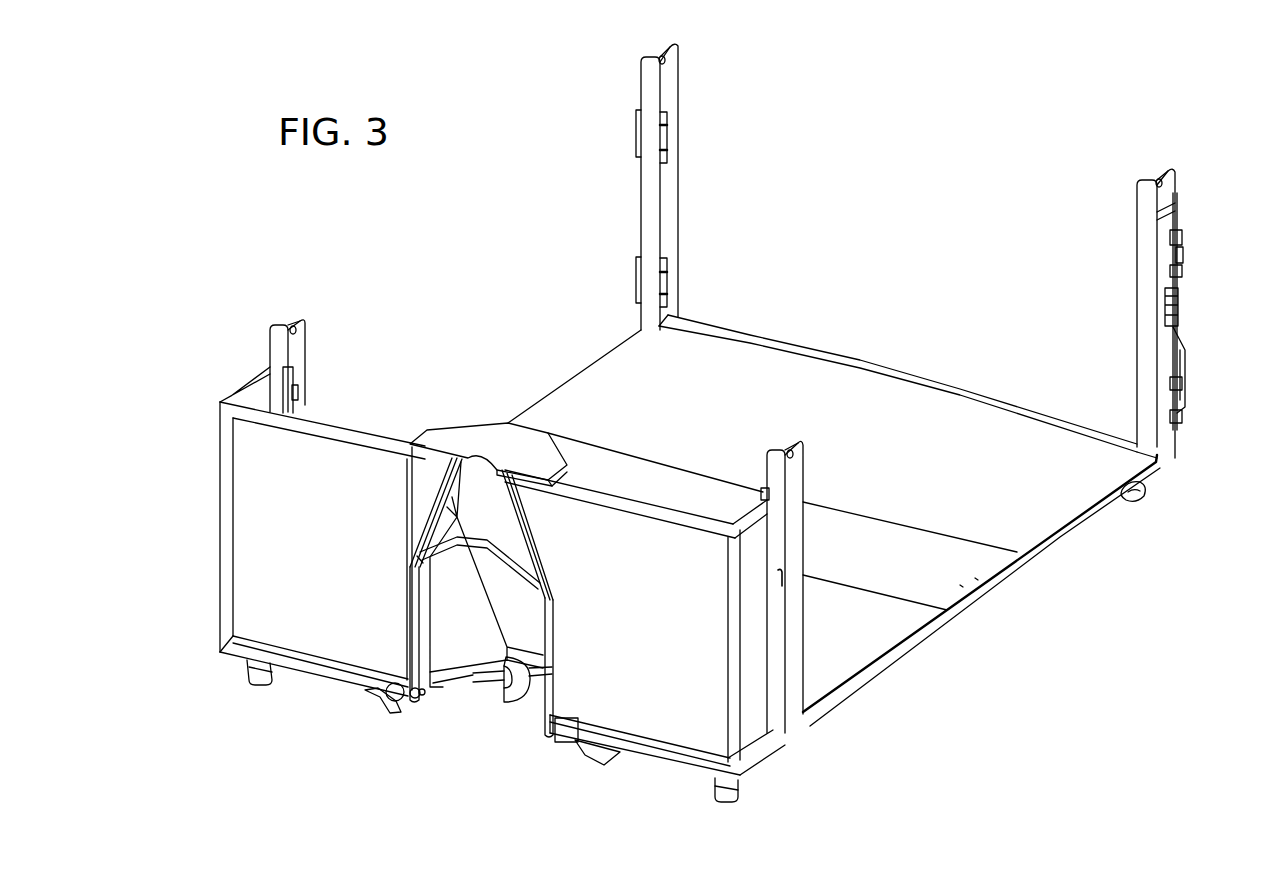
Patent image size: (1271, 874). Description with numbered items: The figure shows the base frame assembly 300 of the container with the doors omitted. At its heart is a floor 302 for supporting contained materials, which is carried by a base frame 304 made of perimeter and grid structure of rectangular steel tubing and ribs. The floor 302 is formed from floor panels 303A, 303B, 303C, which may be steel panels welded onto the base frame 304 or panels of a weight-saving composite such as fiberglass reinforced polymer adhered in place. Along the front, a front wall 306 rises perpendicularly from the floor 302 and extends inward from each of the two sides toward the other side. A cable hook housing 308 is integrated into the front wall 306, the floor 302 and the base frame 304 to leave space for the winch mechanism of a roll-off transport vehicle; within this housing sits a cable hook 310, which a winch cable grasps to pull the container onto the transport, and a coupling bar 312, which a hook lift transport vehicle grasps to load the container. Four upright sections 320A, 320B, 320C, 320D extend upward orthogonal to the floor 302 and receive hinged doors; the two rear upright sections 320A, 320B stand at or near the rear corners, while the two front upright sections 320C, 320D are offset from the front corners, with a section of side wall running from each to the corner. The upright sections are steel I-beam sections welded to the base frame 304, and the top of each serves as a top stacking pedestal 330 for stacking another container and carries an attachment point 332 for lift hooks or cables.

The base frame assembly 300 is at (984, 117).
The floor 302 is at (597, 378).
The floor panel 303A is at (848, 638).
The floor panel 303B is at (935, 588).
The floor panel 303C is at (1015, 507).
The base frame 304 is at (818, 717).
The front wall 306 is at (263, 497).
The cable hook housing 308 is at (441, 589).
The cable hook 310 is at (507, 703).
The coupling bar 312 is at (500, 553).
The rear upright section 320A is at (640, 88).
The rear upright section 320B is at (1173, 200).
The front upright section 320C is at (803, 497).
The front upright section 320D is at (307, 347).
The top stacking pedestal 330 is at (296, 318).
The attachment point 332 is at (666, 60).